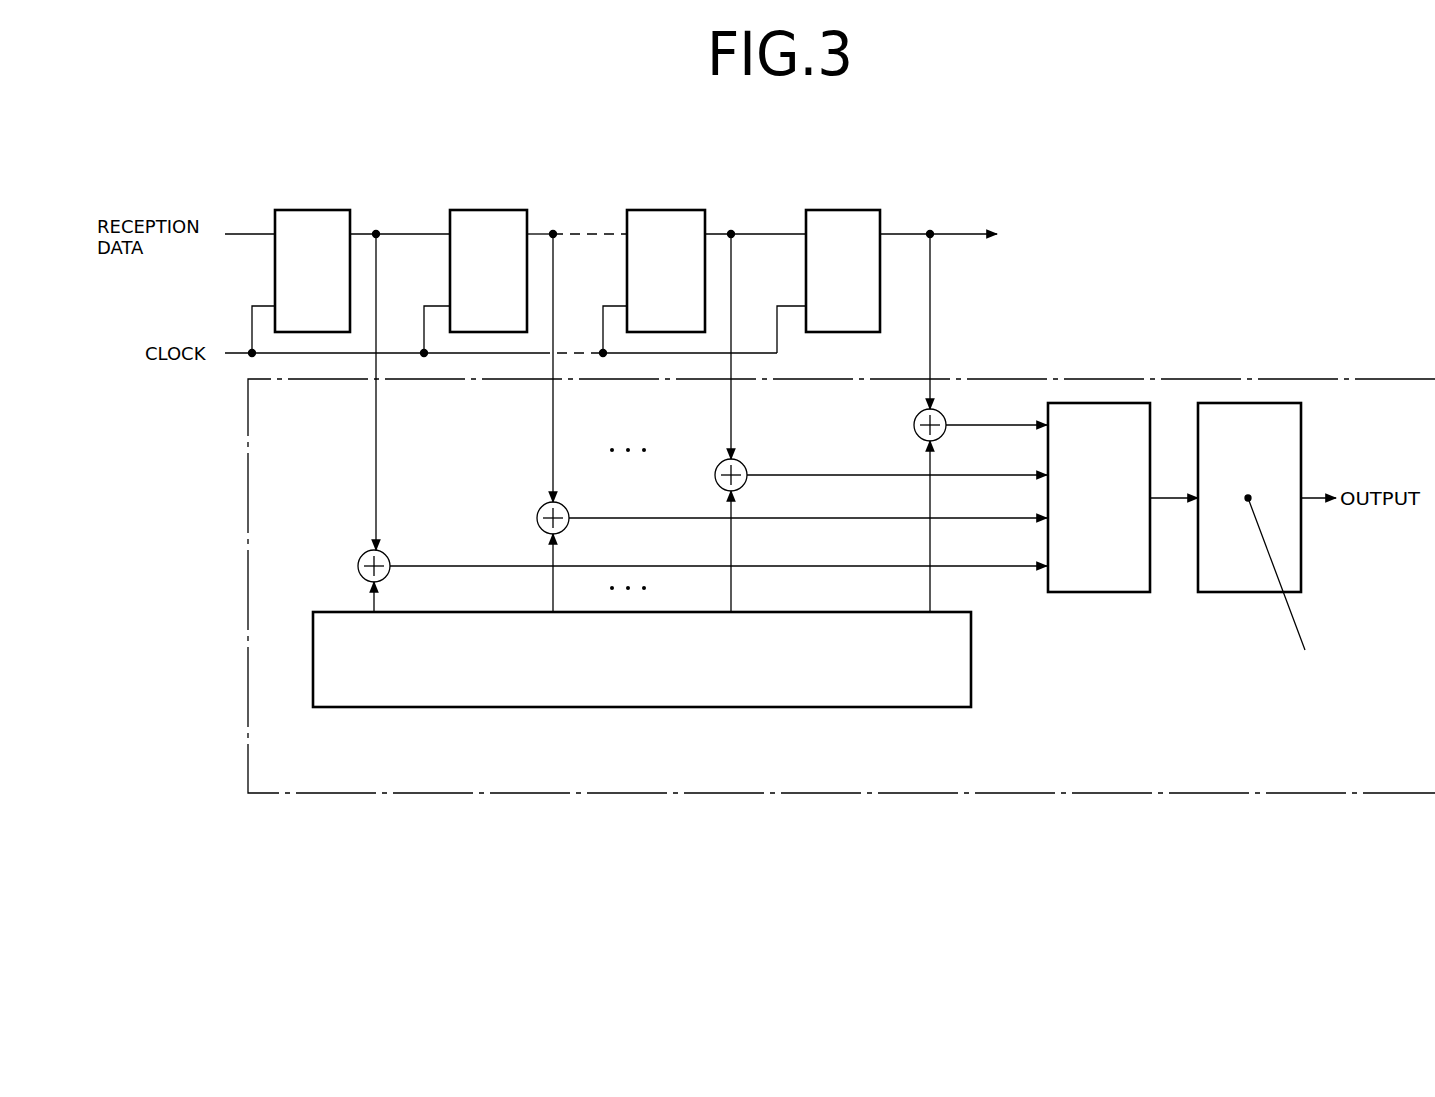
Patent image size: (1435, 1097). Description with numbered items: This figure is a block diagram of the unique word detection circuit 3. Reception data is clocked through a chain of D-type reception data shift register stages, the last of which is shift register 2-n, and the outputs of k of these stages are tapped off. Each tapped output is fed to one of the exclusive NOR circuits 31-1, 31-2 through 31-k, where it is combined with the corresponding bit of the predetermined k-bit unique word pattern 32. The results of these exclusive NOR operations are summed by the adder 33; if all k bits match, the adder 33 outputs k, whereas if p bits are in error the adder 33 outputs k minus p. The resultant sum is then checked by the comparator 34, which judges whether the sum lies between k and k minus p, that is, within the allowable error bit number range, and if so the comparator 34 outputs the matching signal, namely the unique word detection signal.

The reception data shift register 2-n is at (855, 210).
The unique word detection circuit 3 is at (1312, 379).
The exclusive NOR circuit 31-1 is at (387, 554).
The exclusive NOR circuit 31-2 is at (566, 507).
The exclusive NOR circuit 31-k is at (942, 416).
The unique word pattern 32 is at (352, 708).
The adder 33 is at (1068, 594).
The comparator 34 is at (1222, 594).